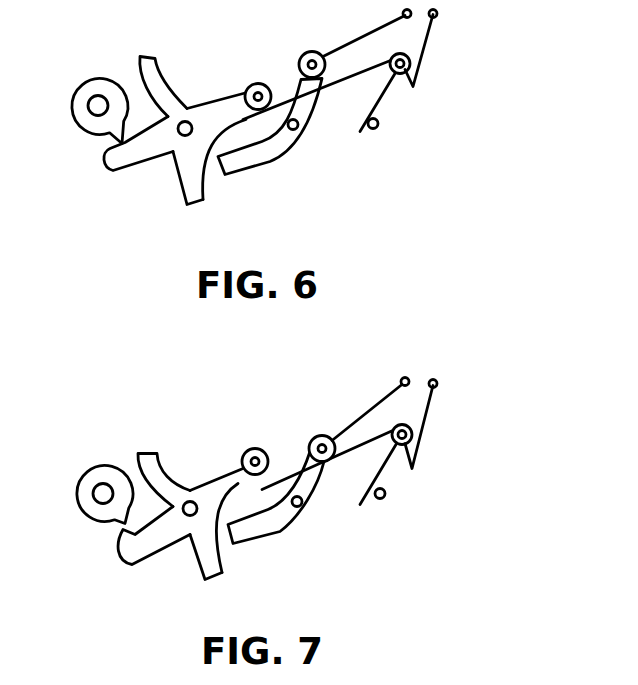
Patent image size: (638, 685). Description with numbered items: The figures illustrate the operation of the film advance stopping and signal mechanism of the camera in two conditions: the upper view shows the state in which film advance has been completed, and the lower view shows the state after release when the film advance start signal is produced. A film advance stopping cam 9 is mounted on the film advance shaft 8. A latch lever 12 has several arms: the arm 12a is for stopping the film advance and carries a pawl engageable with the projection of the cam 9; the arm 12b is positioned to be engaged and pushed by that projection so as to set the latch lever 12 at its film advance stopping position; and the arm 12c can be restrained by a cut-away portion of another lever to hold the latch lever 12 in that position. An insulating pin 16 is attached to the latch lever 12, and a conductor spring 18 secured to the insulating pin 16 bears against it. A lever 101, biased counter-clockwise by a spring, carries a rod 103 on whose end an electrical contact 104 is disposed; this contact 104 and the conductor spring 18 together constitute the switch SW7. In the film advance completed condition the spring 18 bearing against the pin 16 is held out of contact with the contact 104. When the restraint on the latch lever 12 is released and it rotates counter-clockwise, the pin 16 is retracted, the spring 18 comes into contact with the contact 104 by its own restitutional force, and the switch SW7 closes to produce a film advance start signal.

In FIG. 6, the film advance shaft 8 is at (95, 103).
In FIG. 7, the film advance shaft 8 is at (98, 495).
In FIG. 6, the film advance stopping cam 9 is at (96, 74).
In FIG. 7, the film advance stopping cam 9 is at (102, 462).
In FIG. 6, the latch lever 12 is at (214, 99).
In FIG. 7, the latch lever 12 is at (212, 477).
In FIG. 6, the arm 12a is at (112, 172).
In FIG. 7, the arm 12a is at (130, 566).
In FIG. 6, the arm 12b is at (153, 55).
In FIG. 7, the arm 12b is at (150, 452).
In FIG. 6, the arm 12c is at (199, 203).
In FIG. 7, the arm 12c is at (217, 578).
In FIG. 6, the insulating pin 16 is at (261, 82).
In FIG. 7, the insulating pin 16 is at (259, 448).
In FIG. 6, the conductor spring 18 is at (352, 75).
In FIG. 7, the conductor spring 18 is at (357, 445).
In FIG. 6, the lever 101 is at (270, 162).
In FIG. 7, the lever 101 is at (277, 533).
In FIG. 6, the rod 103 is at (298, 126).
In FIG. 7, the rod 103 is at (301, 503).
In FIG. 6, the electrical contact 104 is at (313, 50).
In FIG. 7, the electrical contact 104 is at (318, 433).
In FIG. 6, the switch SW7 is at (406, 47).
In FIG. 7, the switch SW7 is at (411, 420).